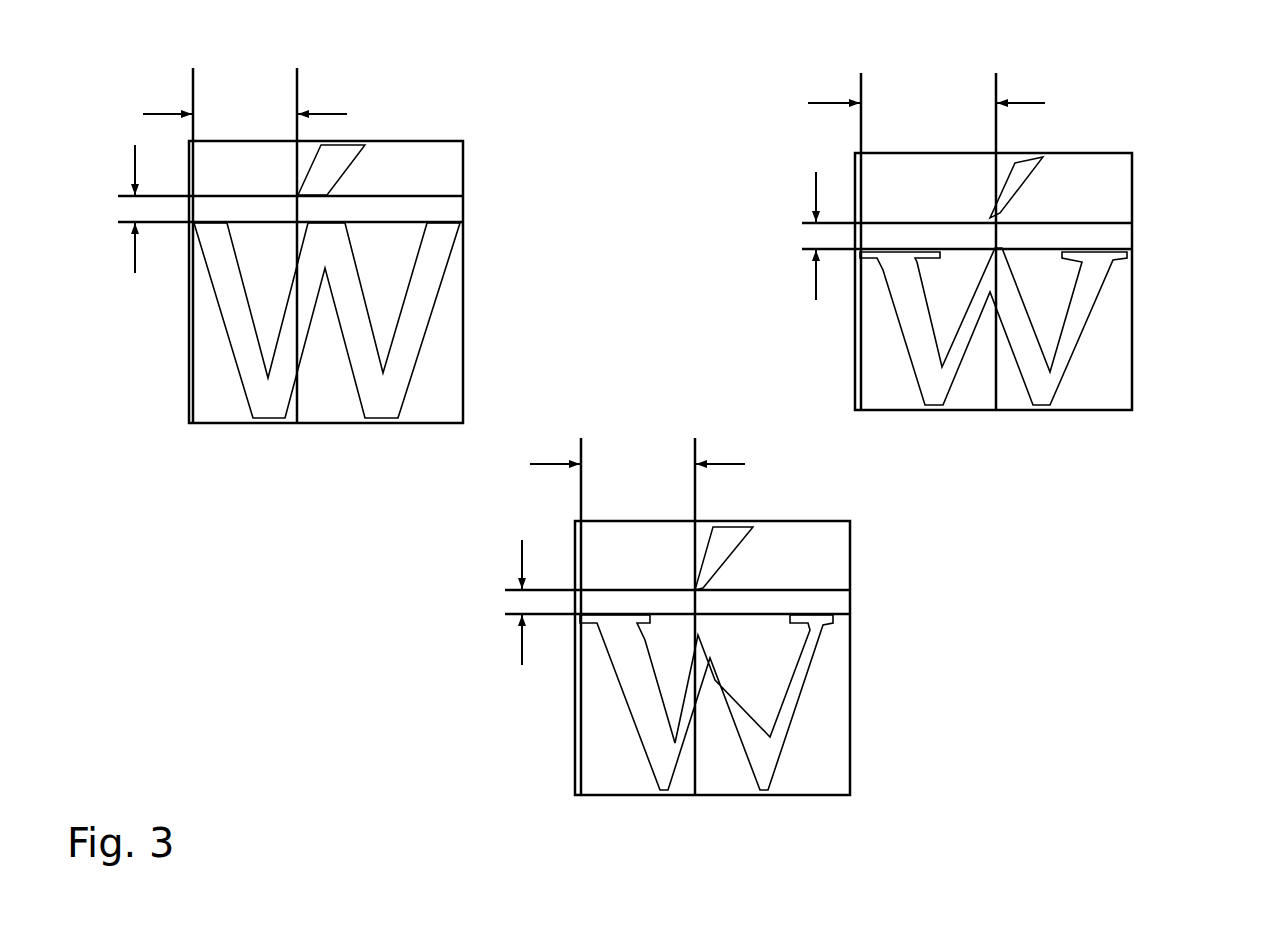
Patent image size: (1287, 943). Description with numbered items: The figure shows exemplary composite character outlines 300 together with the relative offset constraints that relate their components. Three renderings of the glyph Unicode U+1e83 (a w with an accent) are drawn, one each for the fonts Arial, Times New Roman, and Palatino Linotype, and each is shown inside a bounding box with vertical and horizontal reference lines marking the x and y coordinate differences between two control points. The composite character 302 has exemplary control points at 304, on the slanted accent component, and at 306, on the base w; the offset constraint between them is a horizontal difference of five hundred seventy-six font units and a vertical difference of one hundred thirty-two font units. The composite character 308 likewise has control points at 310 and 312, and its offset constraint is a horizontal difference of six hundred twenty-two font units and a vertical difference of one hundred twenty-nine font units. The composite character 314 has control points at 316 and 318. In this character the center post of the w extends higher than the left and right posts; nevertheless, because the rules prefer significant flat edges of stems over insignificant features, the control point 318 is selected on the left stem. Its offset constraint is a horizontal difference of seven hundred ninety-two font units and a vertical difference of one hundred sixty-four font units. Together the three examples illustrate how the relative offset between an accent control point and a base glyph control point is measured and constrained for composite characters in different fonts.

The composite character outlines 300 is at (1105, 751).
The composite character 302 is at (463, 150).
The control point 304 is at (312, 185).
The control point 306 is at (189, 230).
The composite character 308 is at (850, 554).
The control point 310 is at (712, 573).
The control point 312 is at (567, 629).
The composite character 314 is at (1132, 197).
The control point 316 is at (1007, 208).
The control point 318 is at (851, 264).